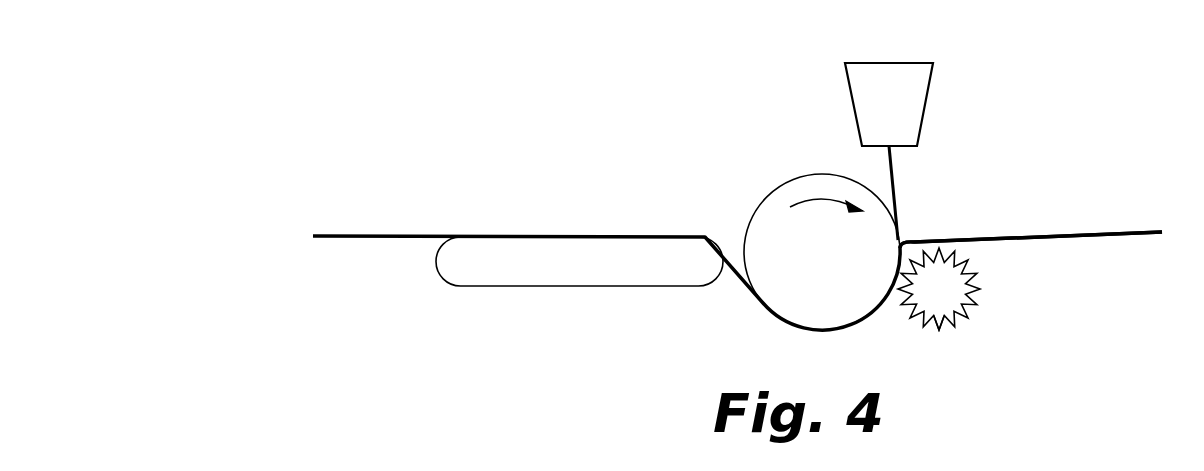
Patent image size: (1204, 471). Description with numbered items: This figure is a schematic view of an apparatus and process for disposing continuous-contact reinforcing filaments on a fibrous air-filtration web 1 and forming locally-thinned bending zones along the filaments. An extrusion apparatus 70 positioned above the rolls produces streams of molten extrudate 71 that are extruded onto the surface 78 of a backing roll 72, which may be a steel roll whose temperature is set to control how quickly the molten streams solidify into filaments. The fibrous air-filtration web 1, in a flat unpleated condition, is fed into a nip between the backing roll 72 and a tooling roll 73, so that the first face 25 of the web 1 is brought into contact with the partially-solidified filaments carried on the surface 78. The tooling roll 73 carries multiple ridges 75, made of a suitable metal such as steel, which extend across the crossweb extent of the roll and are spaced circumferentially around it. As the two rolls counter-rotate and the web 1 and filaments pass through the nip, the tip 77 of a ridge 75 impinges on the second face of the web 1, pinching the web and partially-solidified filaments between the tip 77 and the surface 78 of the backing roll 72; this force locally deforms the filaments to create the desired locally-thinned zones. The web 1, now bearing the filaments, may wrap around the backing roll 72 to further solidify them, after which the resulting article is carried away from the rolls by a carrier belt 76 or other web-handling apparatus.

The fibrous air-filtration web 1 is at (1108, 236).
The first face 25 is at (1030, 239).
The extrusion apparatus 70 is at (876, 72).
The molten extrudate 71 is at (898, 153).
The backing roll 72 is at (804, 188).
The tooling roll 73 is at (955, 328).
The ridges 75 is at (913, 306).
The carrier belt 76 is at (557, 272).
The tip 77 is at (978, 287).
The surface 78 is at (759, 210).